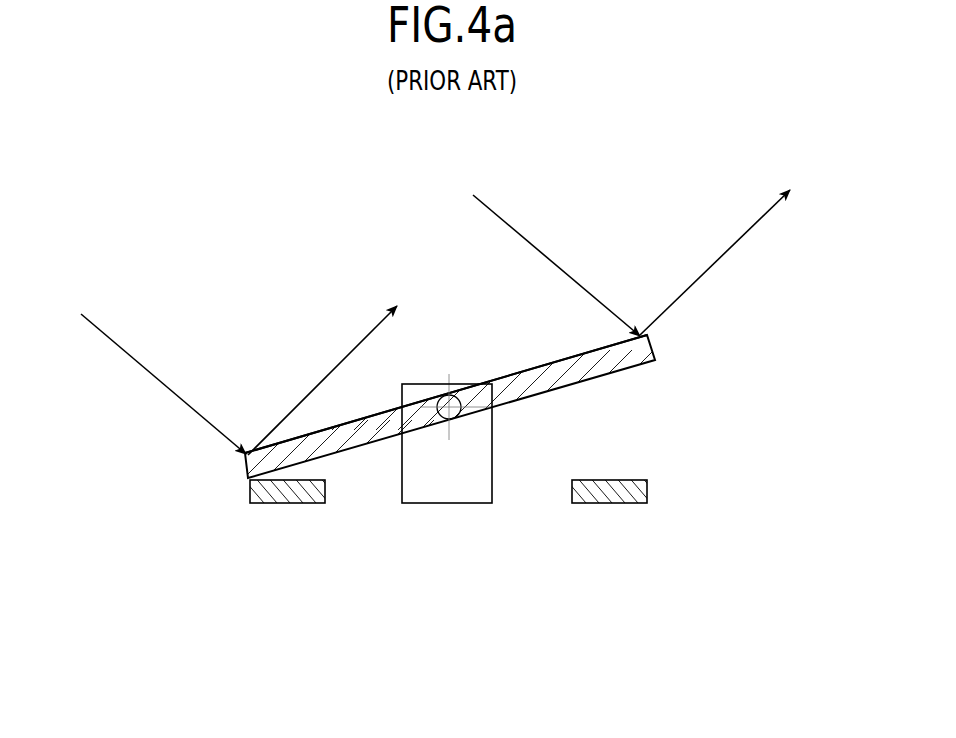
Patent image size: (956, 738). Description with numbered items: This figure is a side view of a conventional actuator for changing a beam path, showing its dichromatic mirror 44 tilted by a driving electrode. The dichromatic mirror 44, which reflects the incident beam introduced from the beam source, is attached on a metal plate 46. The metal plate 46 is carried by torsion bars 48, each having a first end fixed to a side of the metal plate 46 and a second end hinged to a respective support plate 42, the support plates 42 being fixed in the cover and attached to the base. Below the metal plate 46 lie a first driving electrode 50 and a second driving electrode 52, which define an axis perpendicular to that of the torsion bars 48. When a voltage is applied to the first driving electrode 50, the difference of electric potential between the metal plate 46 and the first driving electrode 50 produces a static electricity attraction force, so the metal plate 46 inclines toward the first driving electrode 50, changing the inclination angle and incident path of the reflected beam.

The support plate 42 is at (450, 494).
The dichromatic mirror 44 is at (533, 366).
The metal plate 46 is at (636, 360).
The torsion bar 48 is at (472, 394).
The first driving electrode 50 is at (280, 503).
The second driving electrode 52 is at (631, 503).